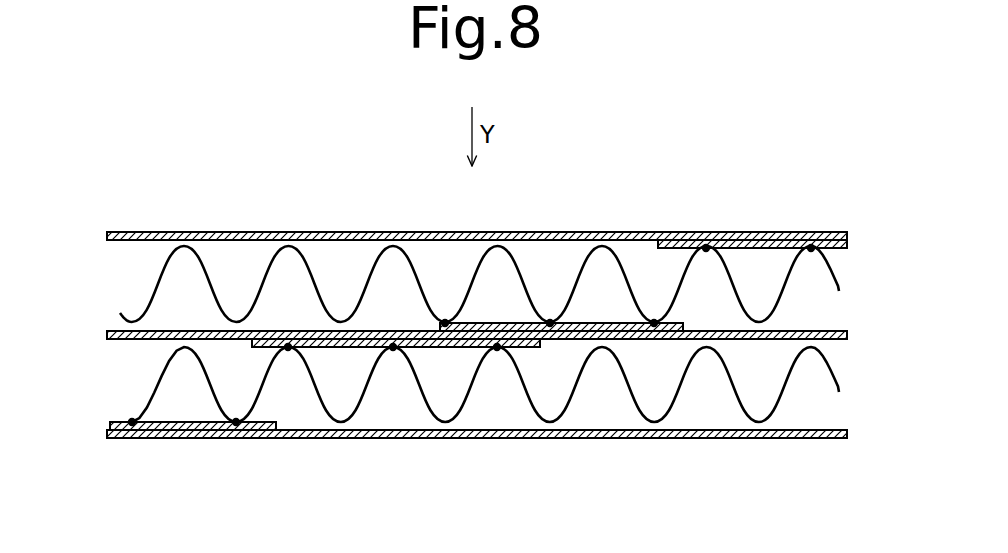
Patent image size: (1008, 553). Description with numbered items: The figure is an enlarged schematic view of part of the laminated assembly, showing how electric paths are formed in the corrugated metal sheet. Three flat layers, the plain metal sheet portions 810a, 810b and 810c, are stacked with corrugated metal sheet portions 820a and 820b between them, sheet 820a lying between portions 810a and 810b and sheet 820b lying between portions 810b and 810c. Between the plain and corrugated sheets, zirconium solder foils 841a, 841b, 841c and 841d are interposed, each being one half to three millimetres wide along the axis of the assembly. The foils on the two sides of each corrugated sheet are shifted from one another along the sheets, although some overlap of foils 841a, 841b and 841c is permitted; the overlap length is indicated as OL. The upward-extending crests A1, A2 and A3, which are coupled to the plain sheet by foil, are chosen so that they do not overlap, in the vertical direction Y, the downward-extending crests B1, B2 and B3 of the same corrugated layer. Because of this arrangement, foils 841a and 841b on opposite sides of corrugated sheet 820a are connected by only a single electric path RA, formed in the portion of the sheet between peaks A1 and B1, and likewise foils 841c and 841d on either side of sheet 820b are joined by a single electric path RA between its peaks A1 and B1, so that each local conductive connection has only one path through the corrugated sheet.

The portion of the plain metal sheet 810a is at (613, 438).
The portion of the plain metal sheet 810b is at (153, 340).
The portion of the plain metal sheet 810c is at (155, 233).
The portion of the corrugated metal sheet 820a is at (832, 362).
The portion of the corrugated metal sheet 820b is at (514, 285).
The zirconium solder foil 841a is at (130, 438).
The zirconium solder foil 841b is at (450, 347).
The zirconium solder foil 841c is at (503, 330).
The zirconium solder foil 841d is at (787, 239).
The crest A1 is at (718, 256).
The crest A2 is at (833, 277).
The crest A3 is at (505, 360).
The crest B1 is at (654, 321).
The crest B2 is at (552, 322).
The crest B3 is at (445, 321).
The electric path RA is at (697, 268).
The overlap length OL is at (683, 232).